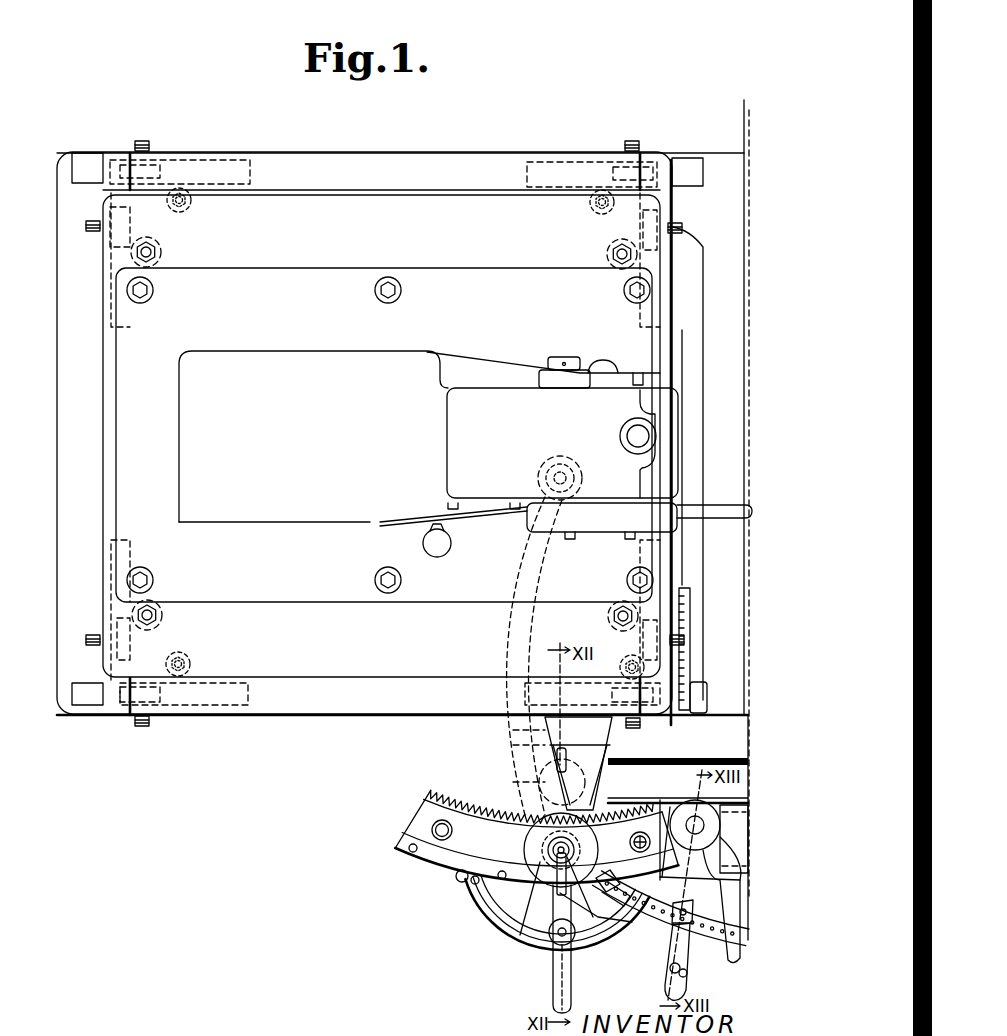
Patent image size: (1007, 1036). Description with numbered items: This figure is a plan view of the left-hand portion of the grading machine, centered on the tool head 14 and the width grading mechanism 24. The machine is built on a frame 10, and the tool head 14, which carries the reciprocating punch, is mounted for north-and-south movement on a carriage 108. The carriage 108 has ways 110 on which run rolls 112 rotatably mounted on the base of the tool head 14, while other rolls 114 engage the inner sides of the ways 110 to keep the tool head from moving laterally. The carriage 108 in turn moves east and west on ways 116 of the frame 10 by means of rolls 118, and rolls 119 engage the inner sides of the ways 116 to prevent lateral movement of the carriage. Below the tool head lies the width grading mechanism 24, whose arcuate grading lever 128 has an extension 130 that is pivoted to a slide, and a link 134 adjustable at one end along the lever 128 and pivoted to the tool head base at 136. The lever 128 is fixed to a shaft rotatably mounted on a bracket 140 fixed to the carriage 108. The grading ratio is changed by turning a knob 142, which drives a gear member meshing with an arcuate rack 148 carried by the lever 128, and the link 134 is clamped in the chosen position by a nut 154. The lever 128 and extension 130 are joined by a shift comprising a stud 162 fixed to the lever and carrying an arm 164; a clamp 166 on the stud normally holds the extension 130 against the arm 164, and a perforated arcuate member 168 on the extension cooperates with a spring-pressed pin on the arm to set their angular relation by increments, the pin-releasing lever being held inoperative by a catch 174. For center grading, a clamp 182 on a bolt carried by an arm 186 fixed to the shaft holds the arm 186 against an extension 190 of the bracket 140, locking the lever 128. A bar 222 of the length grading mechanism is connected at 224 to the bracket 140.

The frame 10 is at (67, 165).
The tool head 14 is at (675, 405).
The width grading mechanism 24 is at (474, 910).
The carriage 108 is at (498, 163).
The ways 110 is at (118, 187).
The rolls 112 is at (115, 243).
The rolls 114 is at (160, 252).
The ways 116 is at (94, 165).
The rolls 118 is at (155, 165).
The rolls 119 is at (193, 203).
The arcuate grading lever 128 is at (425, 863).
The extension 130 is at (749, 843).
The link 134 is at (512, 745).
The pivot 136 is at (568, 478).
The bracket 140 is at (588, 782).
The knob 142 is at (528, 905).
The arcuate rack 148 is at (432, 796).
The nut 154 is at (590, 915).
The stud 162 is at (688, 818).
The arm 164 is at (672, 958).
The clamp 166 is at (740, 965).
The perforated arcuate member 168 is at (637, 922).
The catch 174 is at (690, 972).
The clamp 182 is at (556, 990).
The arm 186 is at (552, 938).
The extension 190 is at (493, 915).
The bar 222 is at (690, 770).
The connection 224 is at (535, 780).